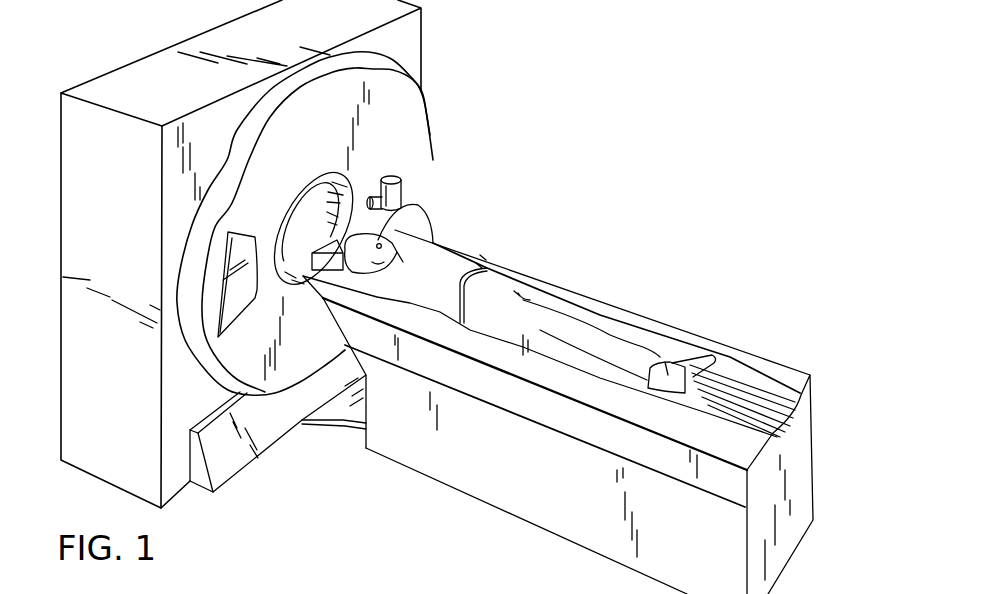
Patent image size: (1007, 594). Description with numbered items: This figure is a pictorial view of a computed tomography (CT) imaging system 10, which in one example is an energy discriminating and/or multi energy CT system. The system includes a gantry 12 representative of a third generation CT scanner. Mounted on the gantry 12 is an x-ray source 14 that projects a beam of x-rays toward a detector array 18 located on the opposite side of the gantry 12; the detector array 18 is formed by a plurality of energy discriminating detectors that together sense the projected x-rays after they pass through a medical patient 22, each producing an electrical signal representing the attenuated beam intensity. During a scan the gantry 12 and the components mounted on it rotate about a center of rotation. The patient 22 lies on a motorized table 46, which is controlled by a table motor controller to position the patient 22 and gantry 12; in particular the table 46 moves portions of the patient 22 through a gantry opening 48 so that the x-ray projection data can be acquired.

The CT imaging system 10 is at (541, 121).
The gantry 12 is at (408, 142).
The x-ray source 14 is at (401, 193).
The detector array 18 is at (239, 304).
The medical patient 22 is at (460, 263).
The motorized table 46 is at (548, 513).
The gantry opening 48 is at (298, 217).